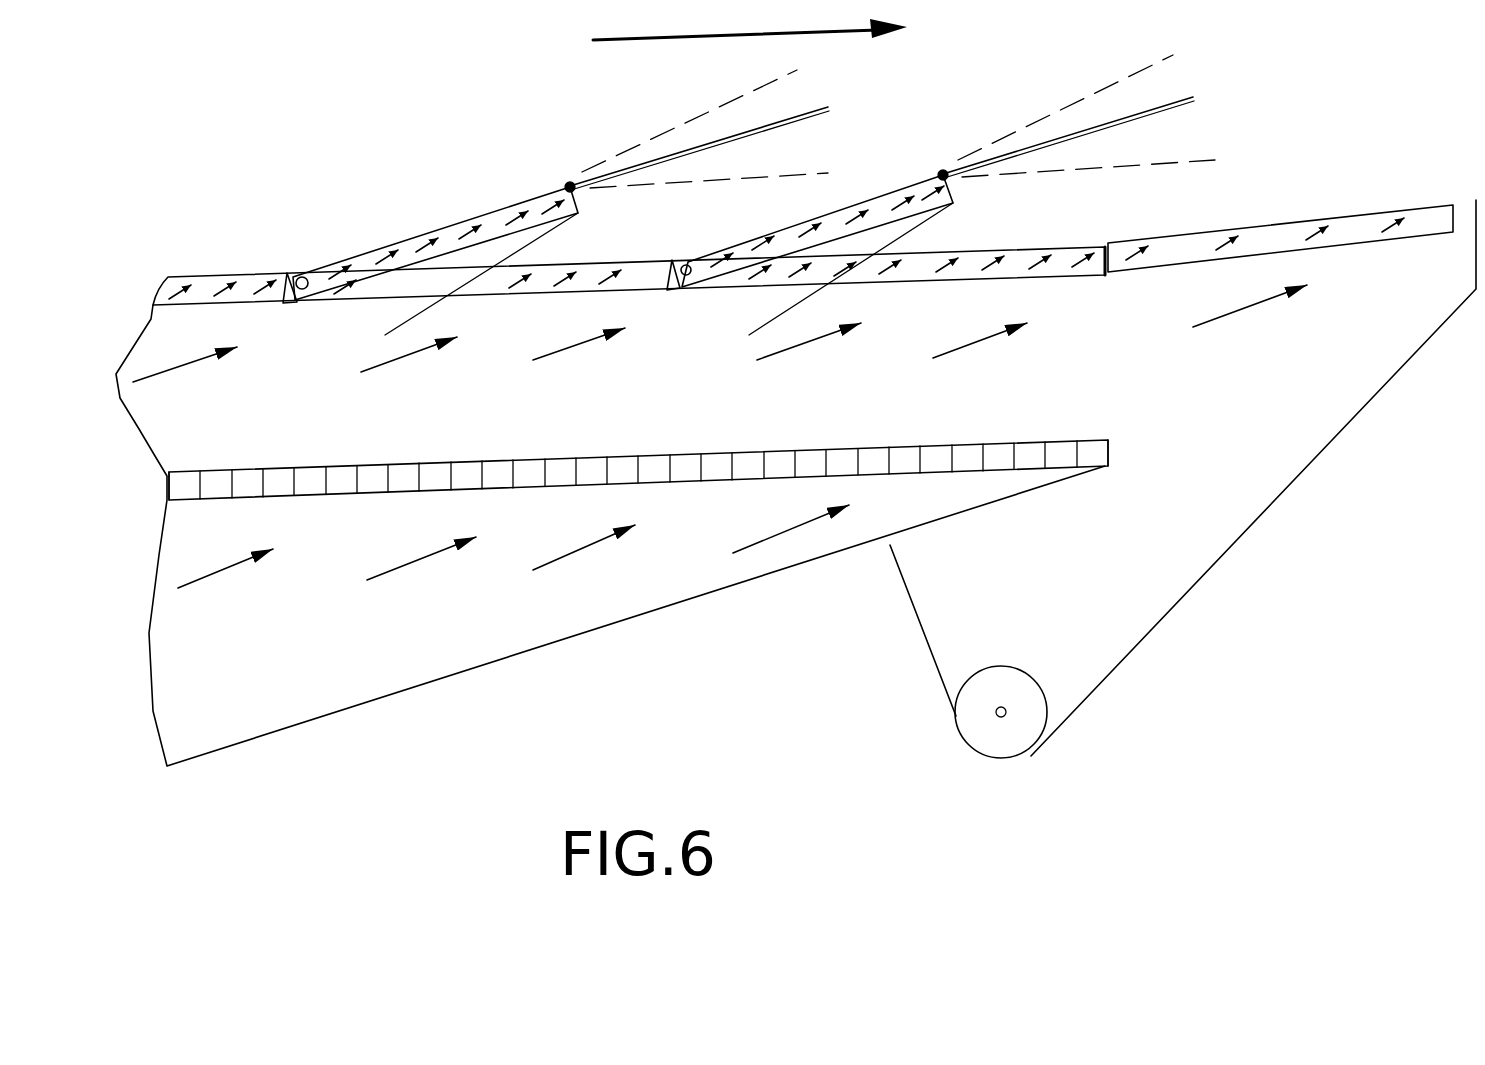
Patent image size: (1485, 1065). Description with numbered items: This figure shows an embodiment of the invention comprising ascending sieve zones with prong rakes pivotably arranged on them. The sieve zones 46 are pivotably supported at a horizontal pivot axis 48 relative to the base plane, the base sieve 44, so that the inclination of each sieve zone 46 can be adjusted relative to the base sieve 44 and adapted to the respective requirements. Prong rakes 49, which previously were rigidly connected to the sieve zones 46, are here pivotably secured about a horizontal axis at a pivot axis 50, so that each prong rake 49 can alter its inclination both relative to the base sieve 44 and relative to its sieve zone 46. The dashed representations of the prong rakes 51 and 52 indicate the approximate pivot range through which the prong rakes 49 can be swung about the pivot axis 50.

The base sieve 44 is at (217, 275).
The sieve zone 46 is at (392, 242).
The horizontal pivot axis 48 is at (301, 276).
The prong rake 49 is at (806, 112).
The pivot axis 50 is at (568, 184).
The dashed representation of prong rake 51 is at (771, 84).
The dashed representation of prong rake 52 is at (803, 178).